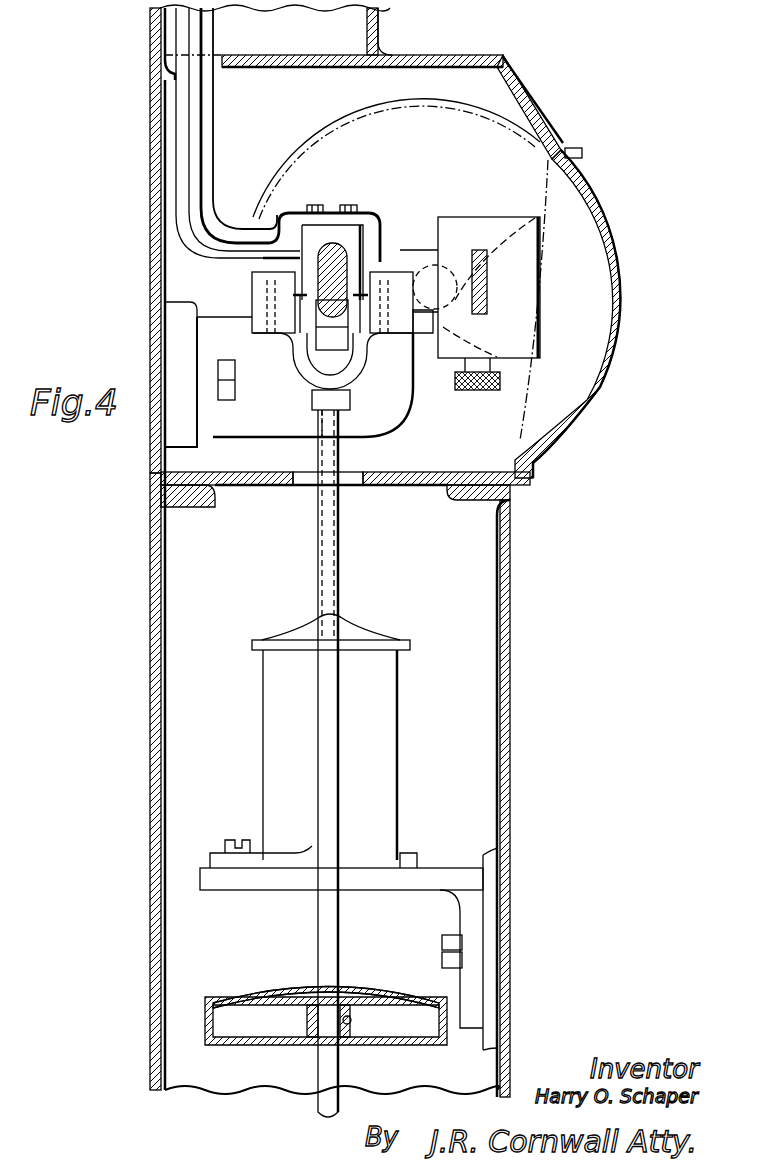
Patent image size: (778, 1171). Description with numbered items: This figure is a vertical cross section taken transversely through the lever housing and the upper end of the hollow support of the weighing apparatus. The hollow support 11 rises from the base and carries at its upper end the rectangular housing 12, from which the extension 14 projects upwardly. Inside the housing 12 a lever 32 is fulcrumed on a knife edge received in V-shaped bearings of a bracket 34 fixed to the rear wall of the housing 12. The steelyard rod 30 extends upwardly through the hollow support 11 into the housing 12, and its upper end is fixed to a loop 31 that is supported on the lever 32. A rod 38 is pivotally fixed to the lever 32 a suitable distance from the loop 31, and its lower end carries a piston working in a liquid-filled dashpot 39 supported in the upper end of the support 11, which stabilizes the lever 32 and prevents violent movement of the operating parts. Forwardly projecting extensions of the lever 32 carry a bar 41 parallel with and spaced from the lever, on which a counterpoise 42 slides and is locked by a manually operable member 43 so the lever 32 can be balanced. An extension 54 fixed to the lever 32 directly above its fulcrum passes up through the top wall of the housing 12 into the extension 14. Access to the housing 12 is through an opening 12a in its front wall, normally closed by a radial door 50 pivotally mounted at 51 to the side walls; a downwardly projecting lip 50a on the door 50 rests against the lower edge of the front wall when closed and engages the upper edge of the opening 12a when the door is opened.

The hollow support 11 is at (150, 737).
The housing 12 is at (150, 218).
The opening 12a is at (563, 145).
The extension 14 is at (380, 18).
The steelyard rod 30 is at (323, 938).
The loop 31 is at (378, 345).
The lever 32 is at (347, 250).
The bracket 34 is at (385, 415).
The rod 38 is at (330, 568).
The dashpot 39 is at (382, 722).
The bar 41 is at (487, 277).
The counterpoise 42 is at (527, 327).
The manually operable member 43 is at (480, 396).
The radial door 50 is at (624, 290).
The lip 50a is at (530, 477).
The pivot 51 is at (432, 290).
The extension 54 is at (185, 33).